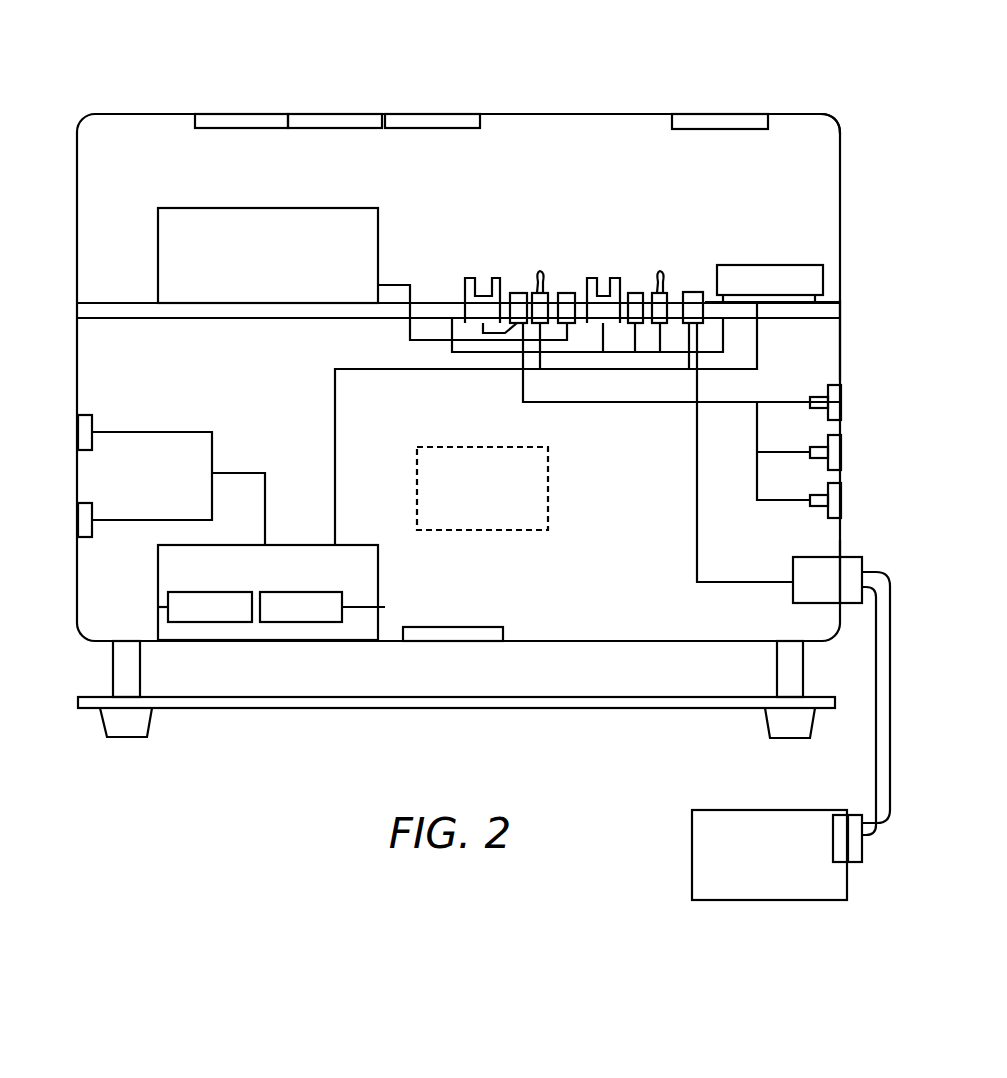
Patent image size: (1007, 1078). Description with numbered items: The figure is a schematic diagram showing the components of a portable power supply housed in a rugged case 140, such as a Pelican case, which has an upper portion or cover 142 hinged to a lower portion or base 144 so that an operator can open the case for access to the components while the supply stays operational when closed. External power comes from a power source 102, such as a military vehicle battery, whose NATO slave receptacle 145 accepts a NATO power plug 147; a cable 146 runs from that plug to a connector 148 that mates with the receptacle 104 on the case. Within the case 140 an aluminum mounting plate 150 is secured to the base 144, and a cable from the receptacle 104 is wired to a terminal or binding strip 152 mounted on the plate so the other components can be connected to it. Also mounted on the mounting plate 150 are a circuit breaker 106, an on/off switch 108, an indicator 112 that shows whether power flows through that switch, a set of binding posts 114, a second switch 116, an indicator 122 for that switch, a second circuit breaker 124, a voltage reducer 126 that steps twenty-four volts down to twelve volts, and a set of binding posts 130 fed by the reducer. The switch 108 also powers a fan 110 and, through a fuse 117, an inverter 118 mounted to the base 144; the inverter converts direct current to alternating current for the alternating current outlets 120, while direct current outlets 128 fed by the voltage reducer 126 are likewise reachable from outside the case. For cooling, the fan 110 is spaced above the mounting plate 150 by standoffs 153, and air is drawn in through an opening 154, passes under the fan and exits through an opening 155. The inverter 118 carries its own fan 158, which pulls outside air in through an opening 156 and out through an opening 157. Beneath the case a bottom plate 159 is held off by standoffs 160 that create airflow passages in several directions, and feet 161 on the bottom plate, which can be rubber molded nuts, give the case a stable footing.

The power source 102 is at (692, 860).
The receptacle 104 is at (793, 557).
The circuit breaker 106 is at (690, 290).
The switch 108 is at (653, 290).
The fan 110 is at (778, 265).
The indicator 112 is at (633, 290).
The binding posts 114 is at (613, 278).
The switch 116 is at (533, 290).
The fuse 117 is at (158, 607).
The inverter 118 is at (292, 543).
The alternating current outlets 120 is at (78, 430).
The indicator 122 is at (563, 290).
The circuit breaker 124 is at (512, 293).
The voltage reducer 126 is at (255, 208).
The direct current outlets 128 is at (833, 405).
The binding posts 130 is at (490, 280).
The case 140 is at (98, 102).
The upper portion 142 is at (841, 163).
The lower portion 144 is at (841, 338).
The NATO slave receptacle 145 is at (840, 863).
The cable 146 is at (876, 742).
The NATO power plug 147 is at (858, 863).
The connector 148 is at (850, 557).
The mounting plate 150 is at (120, 303).
The binding strip 152 is at (497, 355).
The standoffs 153 is at (823, 300).
The opening 154 is at (438, 111).
The opening 155 is at (720, 111).
The opening 156 is at (480, 641).
The opening 157 is at (548, 497).
The fan 158 is at (385, 607).
The bottom plate 159 is at (355, 708).
The standoffs 160 is at (140, 670).
The feet 161 is at (127, 737).